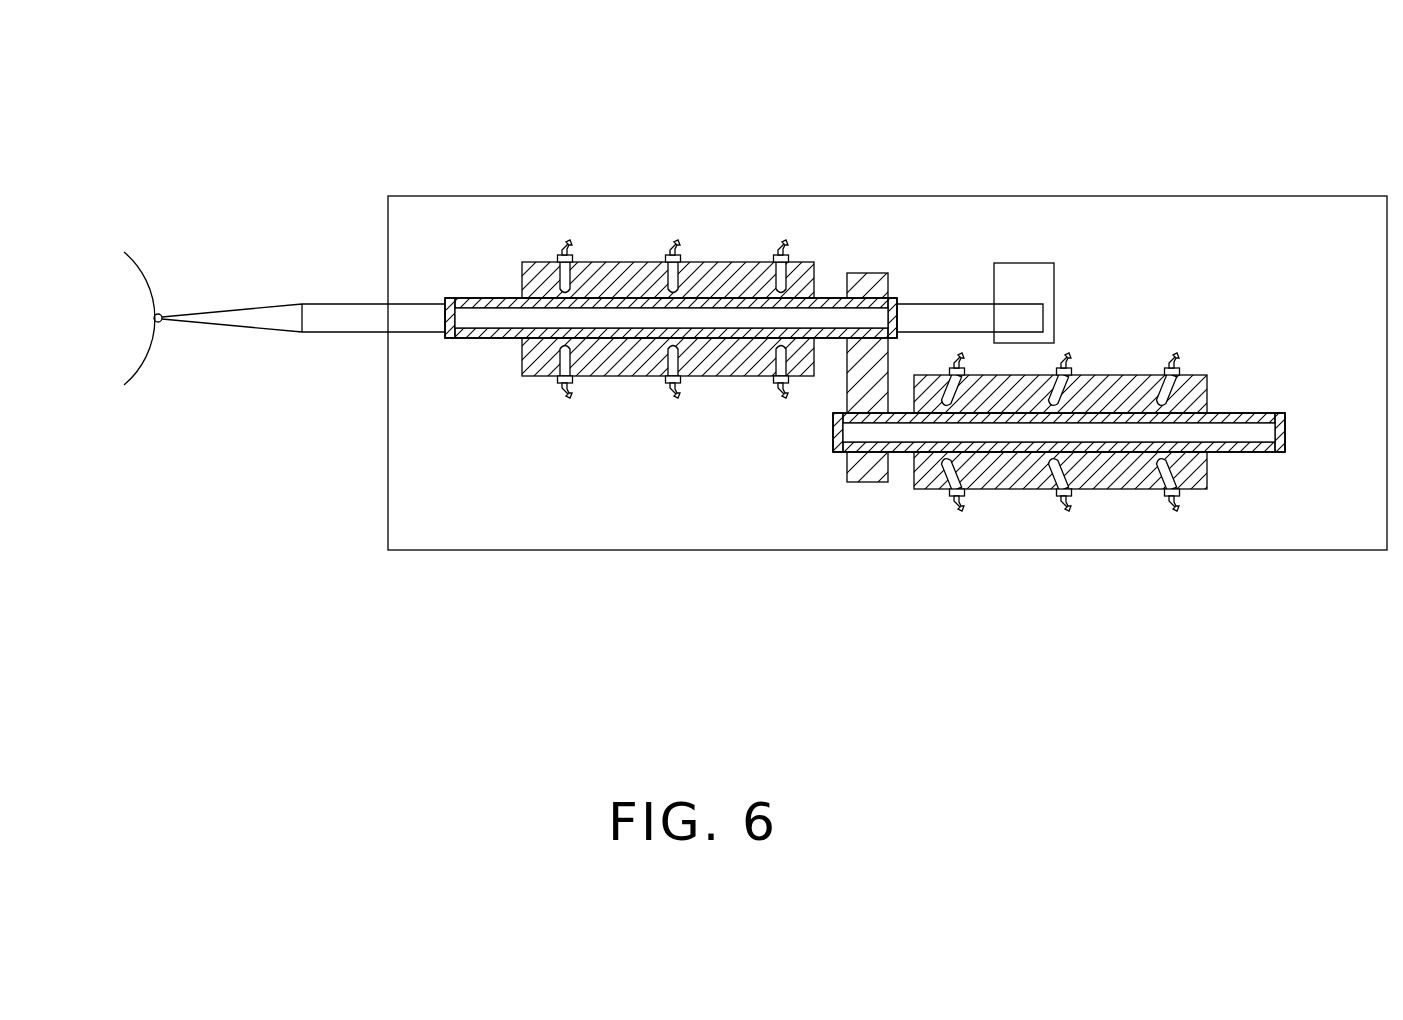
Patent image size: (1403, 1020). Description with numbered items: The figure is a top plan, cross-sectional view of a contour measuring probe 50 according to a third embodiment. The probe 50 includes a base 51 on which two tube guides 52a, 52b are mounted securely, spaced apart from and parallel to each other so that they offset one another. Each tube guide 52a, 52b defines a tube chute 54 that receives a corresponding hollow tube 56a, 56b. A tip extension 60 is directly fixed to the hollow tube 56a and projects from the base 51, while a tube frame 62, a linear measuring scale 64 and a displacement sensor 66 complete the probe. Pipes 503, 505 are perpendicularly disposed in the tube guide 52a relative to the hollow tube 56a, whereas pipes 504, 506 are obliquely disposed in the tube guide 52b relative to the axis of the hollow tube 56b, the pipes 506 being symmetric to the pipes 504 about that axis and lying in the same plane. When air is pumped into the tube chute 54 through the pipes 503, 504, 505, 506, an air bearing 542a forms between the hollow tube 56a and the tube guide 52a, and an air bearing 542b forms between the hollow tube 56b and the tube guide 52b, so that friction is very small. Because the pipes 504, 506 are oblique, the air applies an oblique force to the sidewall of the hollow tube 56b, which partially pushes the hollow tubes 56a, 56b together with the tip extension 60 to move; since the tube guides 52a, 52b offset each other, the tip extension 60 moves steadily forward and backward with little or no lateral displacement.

The contour measuring probe 50 is at (368, 152).
The base 51 is at (428, 218).
The tube guide 52a is at (521, 262).
The tube guide 52b is at (1188, 475).
The air bearing 542a is at (607, 298).
The air bearing 542b is at (1017, 450).
The tube chute 54 is at (869, 376).
The pipe 503 is at (778, 275).
The pipe 504 is at (1153, 398).
The pipe 505 is at (565, 355).
The pipe 506 is at (935, 487).
The hollow tube 56a is at (593, 232).
The hollow tube 56b is at (1026, 521).
The tip extension 60 is at (373, 317).
The tube frame 62 is at (860, 278).
The linear measuring scale 64 is at (1013, 318).
The displacement sensor 66 is at (1050, 324).